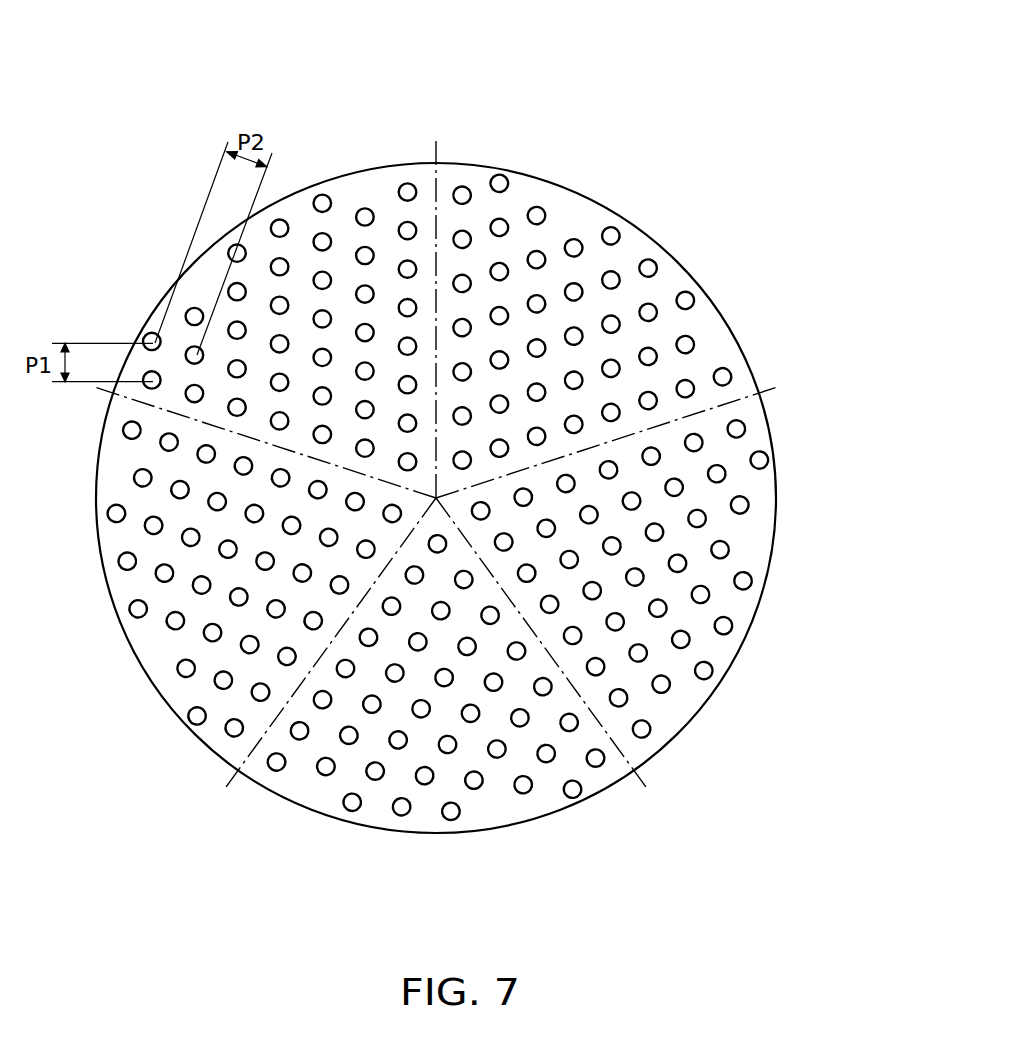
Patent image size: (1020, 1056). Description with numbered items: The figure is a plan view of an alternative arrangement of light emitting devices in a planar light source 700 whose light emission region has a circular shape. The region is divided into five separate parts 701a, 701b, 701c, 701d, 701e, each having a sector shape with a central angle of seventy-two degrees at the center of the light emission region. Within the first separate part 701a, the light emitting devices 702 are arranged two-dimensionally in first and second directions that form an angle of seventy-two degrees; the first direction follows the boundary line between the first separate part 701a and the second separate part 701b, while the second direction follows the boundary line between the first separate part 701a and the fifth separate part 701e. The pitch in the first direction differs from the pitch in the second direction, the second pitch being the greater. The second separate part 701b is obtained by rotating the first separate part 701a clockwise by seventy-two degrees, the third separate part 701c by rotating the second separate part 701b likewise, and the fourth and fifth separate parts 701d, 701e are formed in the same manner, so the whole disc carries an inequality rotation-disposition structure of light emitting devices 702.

The planar light source 700 is at (573, 112).
The light emitting devices 702 is at (498, 178).
The first separate part 701a is at (347, 183).
The second separate part 701b is at (642, 243).
The third separate part 701c is at (763, 539).
The fourth separate part 701d is at (492, 823).
The fifth separate part 701e is at (148, 654).